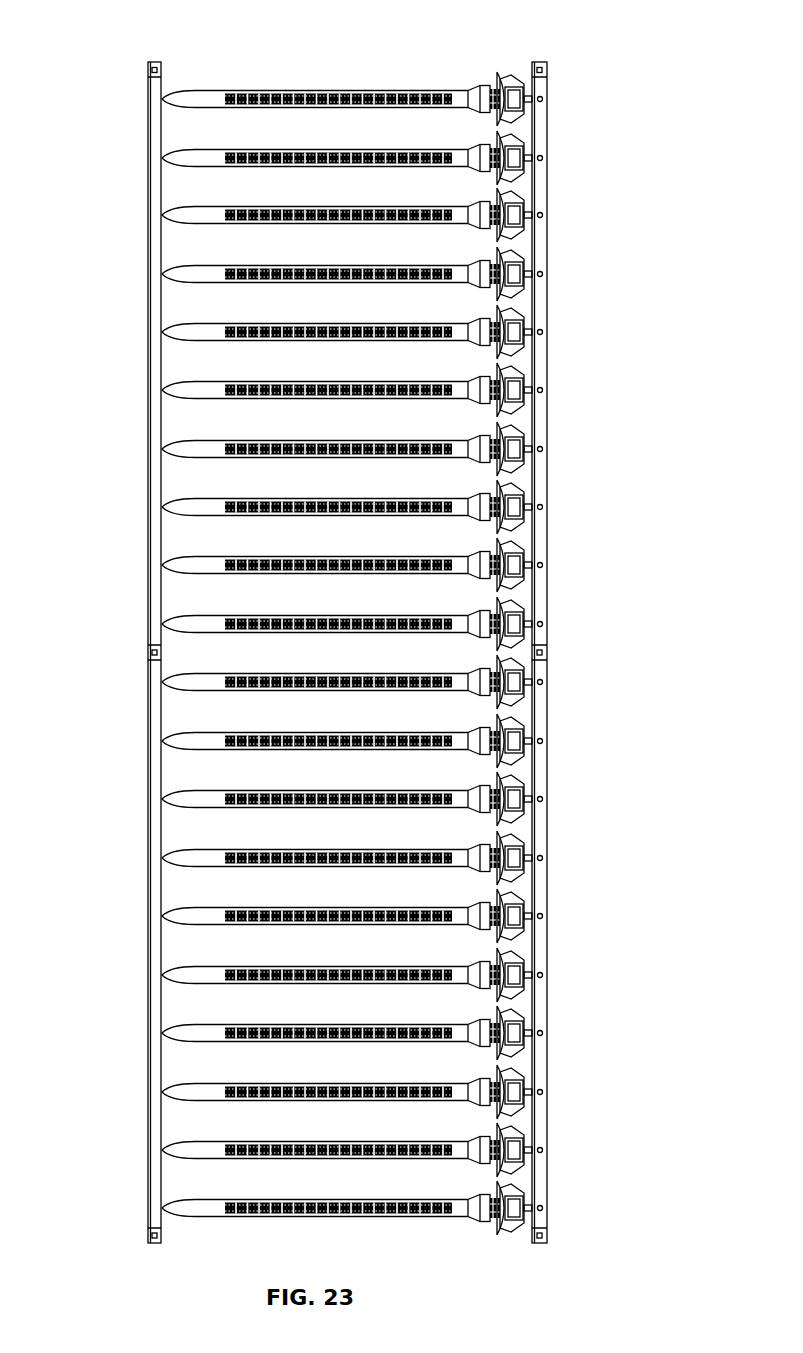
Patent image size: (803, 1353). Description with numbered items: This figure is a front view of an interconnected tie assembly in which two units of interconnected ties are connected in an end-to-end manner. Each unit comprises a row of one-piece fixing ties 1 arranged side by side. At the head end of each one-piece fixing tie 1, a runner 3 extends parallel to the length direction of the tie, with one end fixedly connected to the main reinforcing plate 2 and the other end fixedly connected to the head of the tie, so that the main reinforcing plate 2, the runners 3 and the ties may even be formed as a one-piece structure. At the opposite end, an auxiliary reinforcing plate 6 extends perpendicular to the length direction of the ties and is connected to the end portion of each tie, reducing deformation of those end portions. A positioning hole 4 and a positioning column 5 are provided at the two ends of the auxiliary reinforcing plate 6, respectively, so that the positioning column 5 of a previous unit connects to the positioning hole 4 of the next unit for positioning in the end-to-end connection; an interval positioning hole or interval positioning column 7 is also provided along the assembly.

The one-piece fixing tie 1 is at (322, 92).
The main reinforcing plate 2 is at (545, 118).
The runner 3 is at (533, 212).
The positioning hole 4 is at (152, 70).
The positioning column 5 is at (148, 1230).
The auxiliary reinforcing plate 6 is at (155, 307).
The interval positioning hole or interval positioning column 7 is at (541, 330).